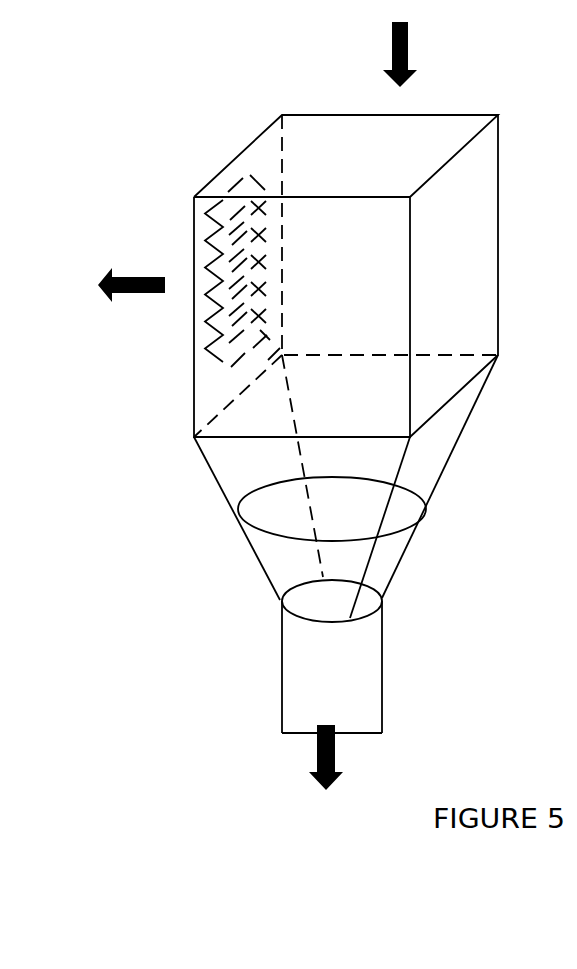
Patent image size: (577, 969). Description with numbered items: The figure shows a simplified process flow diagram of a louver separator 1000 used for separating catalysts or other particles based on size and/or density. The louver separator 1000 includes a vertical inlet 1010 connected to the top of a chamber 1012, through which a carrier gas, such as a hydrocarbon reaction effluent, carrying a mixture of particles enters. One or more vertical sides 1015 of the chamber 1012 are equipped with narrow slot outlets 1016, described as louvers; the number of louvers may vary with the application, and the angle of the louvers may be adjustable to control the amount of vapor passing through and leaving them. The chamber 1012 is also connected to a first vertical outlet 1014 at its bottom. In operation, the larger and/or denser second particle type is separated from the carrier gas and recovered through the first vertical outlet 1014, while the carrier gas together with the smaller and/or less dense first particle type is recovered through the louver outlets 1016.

The louver separator 1000 is at (121, 565).
The vertical inlet 1010 is at (421, 54).
The chamber 1012 is at (346, 366).
The first vertical outlet 1014 is at (332, 656).
The vertical side 1015 is at (215, 363).
The narrow slot outlets 1016 is at (131, 299).